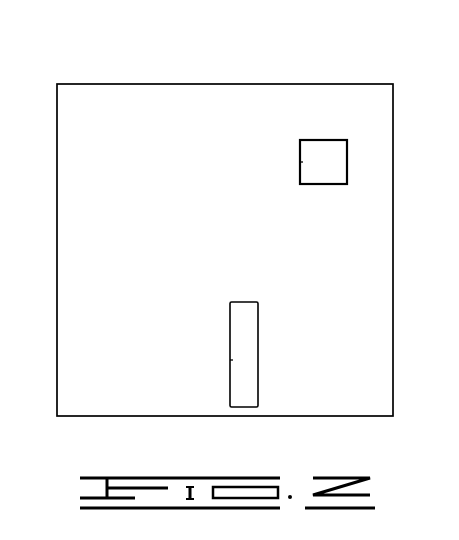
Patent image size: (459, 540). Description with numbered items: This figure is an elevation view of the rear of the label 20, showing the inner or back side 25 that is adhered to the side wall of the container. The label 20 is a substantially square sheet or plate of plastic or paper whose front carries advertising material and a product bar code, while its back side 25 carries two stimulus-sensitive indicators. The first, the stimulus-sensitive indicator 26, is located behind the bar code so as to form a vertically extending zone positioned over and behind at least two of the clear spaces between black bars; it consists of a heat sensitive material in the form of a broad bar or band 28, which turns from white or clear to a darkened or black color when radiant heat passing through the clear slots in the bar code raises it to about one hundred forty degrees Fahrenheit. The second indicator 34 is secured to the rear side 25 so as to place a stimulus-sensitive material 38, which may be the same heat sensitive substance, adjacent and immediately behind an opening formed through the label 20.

The label 20 is at (71, 84).
The inner or back side 25 is at (236, 249).
The second indicator 34 is at (351, 156).
The stimulus-sensitive material 38 is at (312, 166).
The stimulus-sensitive indicator 26 is at (258, 349).
The broad bar or band 28 is at (241, 360).